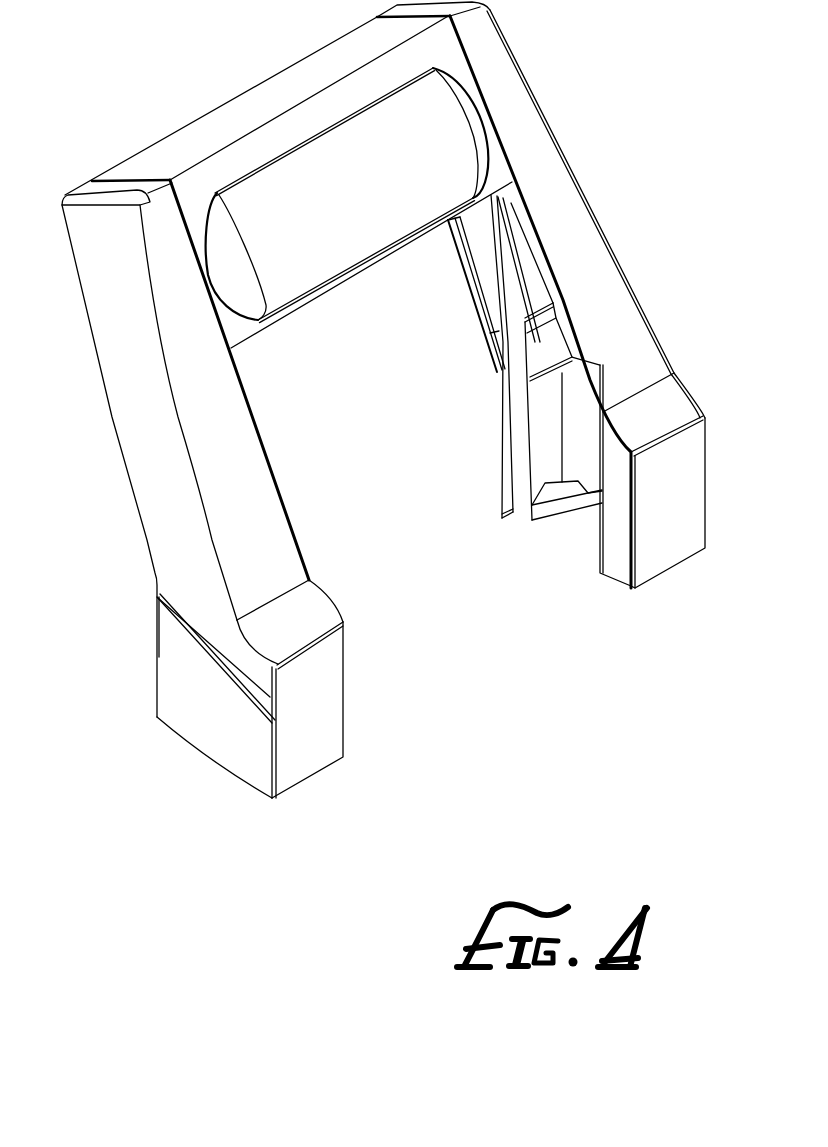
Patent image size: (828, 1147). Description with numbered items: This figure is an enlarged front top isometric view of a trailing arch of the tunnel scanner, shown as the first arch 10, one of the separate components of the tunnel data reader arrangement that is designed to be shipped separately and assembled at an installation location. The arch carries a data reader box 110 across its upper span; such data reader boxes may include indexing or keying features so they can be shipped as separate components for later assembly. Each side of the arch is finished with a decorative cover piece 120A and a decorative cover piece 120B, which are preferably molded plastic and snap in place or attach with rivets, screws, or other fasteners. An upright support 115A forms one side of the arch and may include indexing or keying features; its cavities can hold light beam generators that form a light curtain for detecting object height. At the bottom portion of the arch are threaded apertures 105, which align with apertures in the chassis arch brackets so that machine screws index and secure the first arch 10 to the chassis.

The first arch 10 is at (380, 400).
The data reader boxes 110 is at (263, 97).
The decorative cover piece 120A is at (578, 230).
The decorative cover piece 120B is at (182, 577).
The upright support 115A is at (517, 337).
The threaded apertures 105 is at (575, 490).